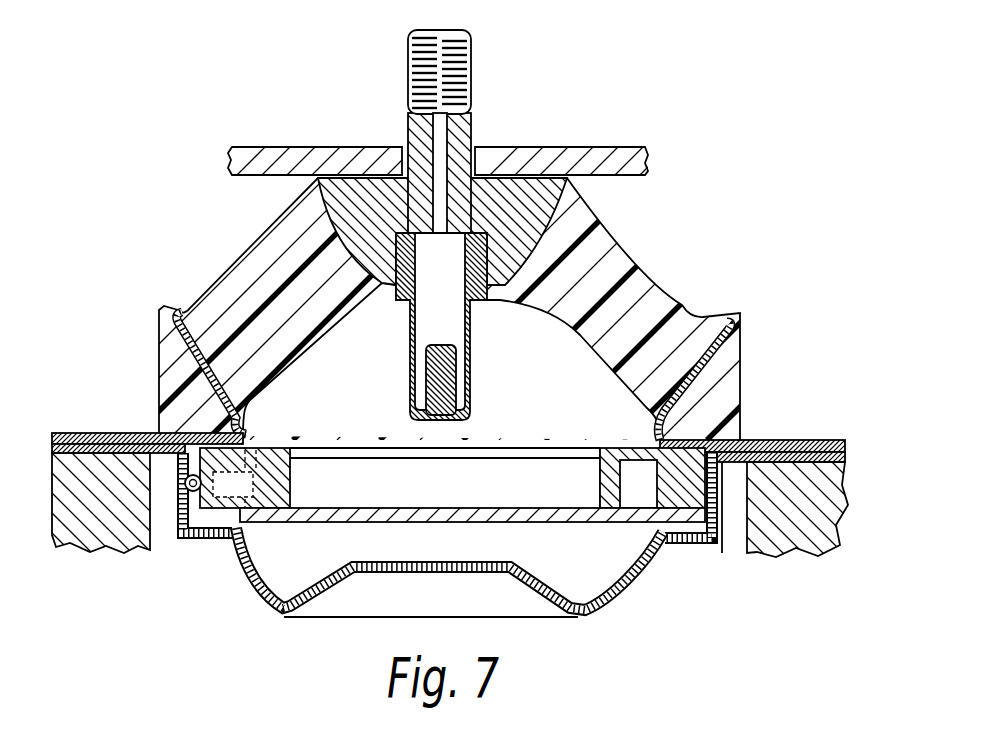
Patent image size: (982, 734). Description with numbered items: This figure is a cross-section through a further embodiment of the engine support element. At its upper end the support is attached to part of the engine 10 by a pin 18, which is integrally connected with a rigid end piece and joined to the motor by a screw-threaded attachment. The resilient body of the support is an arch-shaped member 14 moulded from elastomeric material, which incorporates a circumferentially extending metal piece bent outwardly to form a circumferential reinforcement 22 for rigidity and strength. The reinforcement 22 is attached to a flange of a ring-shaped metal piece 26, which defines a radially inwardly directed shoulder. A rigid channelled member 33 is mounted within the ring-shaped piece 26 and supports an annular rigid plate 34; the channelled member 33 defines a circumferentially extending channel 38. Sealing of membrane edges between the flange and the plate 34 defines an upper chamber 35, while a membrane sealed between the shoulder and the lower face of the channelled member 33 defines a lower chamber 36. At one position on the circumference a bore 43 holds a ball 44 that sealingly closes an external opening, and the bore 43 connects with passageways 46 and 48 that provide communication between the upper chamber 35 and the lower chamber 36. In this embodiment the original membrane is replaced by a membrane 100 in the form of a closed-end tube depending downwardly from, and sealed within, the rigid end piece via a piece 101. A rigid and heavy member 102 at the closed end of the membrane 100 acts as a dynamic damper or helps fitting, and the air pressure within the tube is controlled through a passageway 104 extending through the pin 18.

The engine 10 is at (289, 155).
The arch-shaped member 14 is at (516, 309).
The pin 18 is at (470, 53).
The circumferential reinforcement 22 is at (764, 440).
The ring-shaped metal piece 26 is at (720, 560).
The channelled member 33 is at (612, 505).
The annular rigid plate 34 is at (293, 452).
The upper chamber 35 is at (313, 350).
The lower chamber 36 is at (617, 570).
The channel 38 is at (628, 478).
The bore 43 is at (213, 533).
The ball 44 is at (176, 553).
The passageway 46 is at (260, 438).
The passageway 48 is at (210, 487).
The membrane 100 is at (490, 240).
The piece 101 is at (483, 302).
The rigid and heavy member 102 is at (462, 385).
The passageway 104 is at (440, 141).